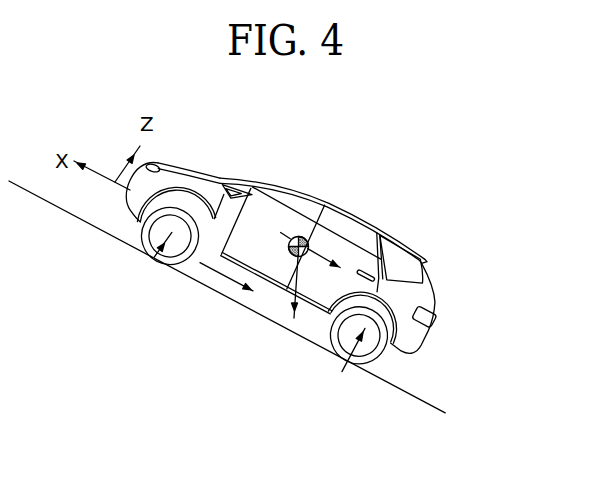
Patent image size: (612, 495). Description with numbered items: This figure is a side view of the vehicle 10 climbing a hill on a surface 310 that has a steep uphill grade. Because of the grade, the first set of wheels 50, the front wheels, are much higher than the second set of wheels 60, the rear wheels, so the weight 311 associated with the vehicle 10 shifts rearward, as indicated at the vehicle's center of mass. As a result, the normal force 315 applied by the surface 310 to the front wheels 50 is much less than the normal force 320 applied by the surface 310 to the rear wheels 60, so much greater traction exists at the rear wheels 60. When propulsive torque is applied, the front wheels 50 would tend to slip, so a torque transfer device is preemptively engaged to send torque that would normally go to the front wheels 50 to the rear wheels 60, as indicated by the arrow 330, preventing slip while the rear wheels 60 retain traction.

The vehicle 10 is at (387, 219).
The first set of wheels 50 is at (138, 220).
The second set of wheels 60 is at (390, 366).
The surface 310 is at (424, 402).
The weight 311 is at (293, 257).
The normal force 315 is at (157, 258).
The normal force 320 is at (359, 366).
The arrow 330 is at (223, 280).